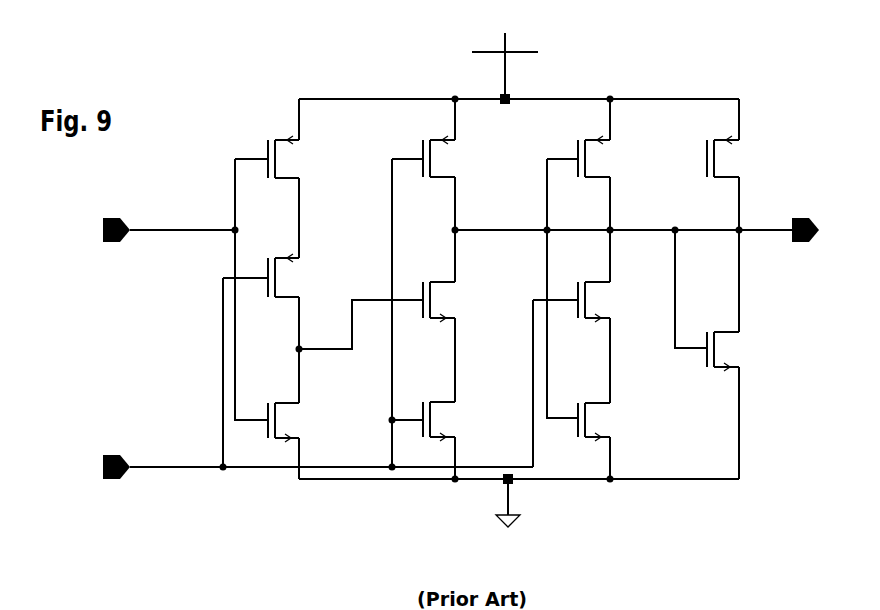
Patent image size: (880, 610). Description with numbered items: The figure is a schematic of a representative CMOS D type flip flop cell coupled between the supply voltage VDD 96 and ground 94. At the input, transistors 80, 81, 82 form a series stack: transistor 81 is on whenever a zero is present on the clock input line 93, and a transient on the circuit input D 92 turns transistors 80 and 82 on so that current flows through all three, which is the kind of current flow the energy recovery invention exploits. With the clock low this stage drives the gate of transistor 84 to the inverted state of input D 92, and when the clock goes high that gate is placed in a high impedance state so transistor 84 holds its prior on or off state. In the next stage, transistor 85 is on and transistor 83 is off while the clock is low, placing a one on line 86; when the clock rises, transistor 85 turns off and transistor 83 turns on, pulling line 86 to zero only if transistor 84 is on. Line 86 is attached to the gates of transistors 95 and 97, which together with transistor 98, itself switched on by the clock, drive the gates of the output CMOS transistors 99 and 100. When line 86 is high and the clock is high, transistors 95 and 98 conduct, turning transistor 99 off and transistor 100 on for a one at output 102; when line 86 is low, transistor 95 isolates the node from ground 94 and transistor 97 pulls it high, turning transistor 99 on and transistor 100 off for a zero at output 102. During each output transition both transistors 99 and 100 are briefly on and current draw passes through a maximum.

The transistor 80 is at (283, 403).
The transistor 81 is at (274, 264).
The transistor 82 is at (268, 144).
The transistor 83 is at (423, 412).
The transistor 84 is at (423, 294).
The transistor 85 is at (423, 150).
The line 86 is at (524, 230).
The circuit input D 92 is at (160, 230).
The clock input line 93 is at (146, 468).
The ground 94 is at (507, 495).
The transistor 95 is at (578, 428).
The VDD 96 is at (505, 73).
The transistor 97 is at (578, 130).
The transistor 98 is at (580, 308).
The output CMOS transistor 99 is at (707, 362).
The output CMOS transistor 100 is at (707, 150).
The output 102 is at (774, 231).